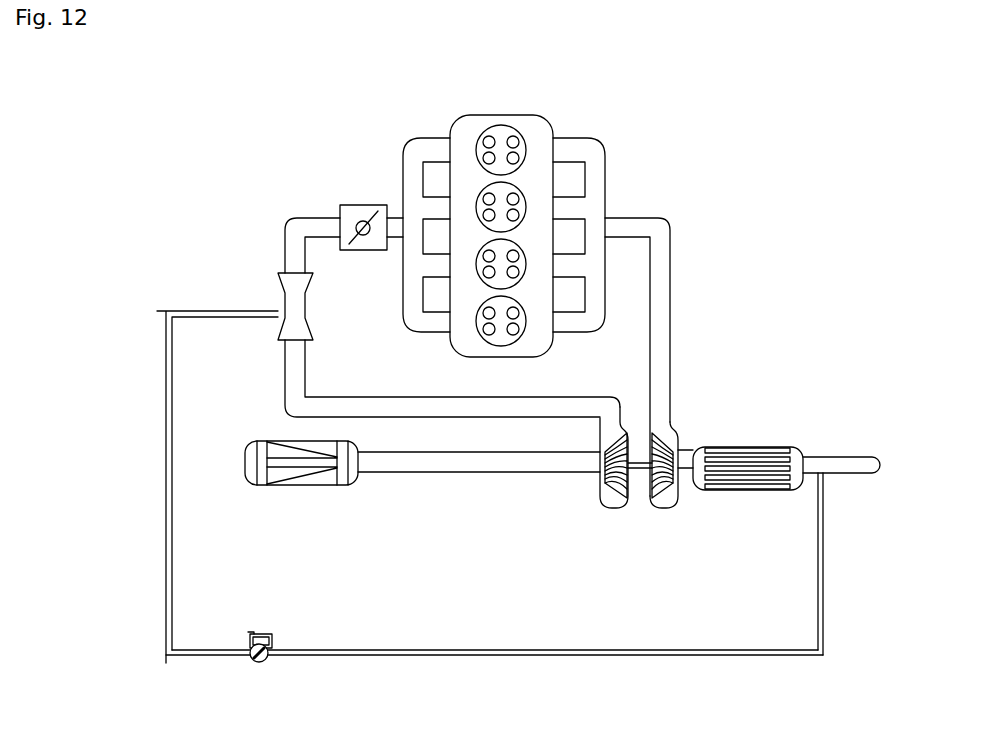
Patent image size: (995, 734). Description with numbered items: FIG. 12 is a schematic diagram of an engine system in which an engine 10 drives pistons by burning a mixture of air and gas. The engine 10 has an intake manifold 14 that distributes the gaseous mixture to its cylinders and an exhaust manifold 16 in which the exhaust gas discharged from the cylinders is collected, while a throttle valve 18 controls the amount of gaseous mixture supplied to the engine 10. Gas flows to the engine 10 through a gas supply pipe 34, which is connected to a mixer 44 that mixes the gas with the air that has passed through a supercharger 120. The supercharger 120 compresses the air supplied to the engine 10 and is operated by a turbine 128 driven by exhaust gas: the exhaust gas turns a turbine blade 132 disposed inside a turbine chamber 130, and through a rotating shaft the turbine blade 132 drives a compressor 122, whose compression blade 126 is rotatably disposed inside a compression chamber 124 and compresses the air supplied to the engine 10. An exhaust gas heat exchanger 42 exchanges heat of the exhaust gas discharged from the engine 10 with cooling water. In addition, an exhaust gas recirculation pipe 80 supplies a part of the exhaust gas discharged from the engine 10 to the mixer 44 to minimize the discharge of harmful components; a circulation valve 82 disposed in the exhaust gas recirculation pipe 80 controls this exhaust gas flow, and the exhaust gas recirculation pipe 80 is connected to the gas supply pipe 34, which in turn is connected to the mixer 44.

The engine 10 is at (537, 132).
The intake manifold 14 is at (428, 320).
The exhaust manifold 16 is at (582, 327).
The throttle valve 18 is at (367, 245).
The gas supply pipe 34 is at (155, 310).
The exhaust gas heat exchanger 42 is at (326, 482).
The mixer 44 is at (285, 297).
The exhaust gas recirculation pipe 80 is at (522, 656).
The circulation valve 82 is at (265, 663).
The supercharger 120 is at (627, 414).
The compressor 122 is at (595, 512).
The compression chamber 124 is at (543, 509).
The compression blade 126 is at (603, 483).
The turbine 128 is at (677, 506).
The turbine chamber 130 is at (710, 509).
The turbine blade 132 is at (675, 485).